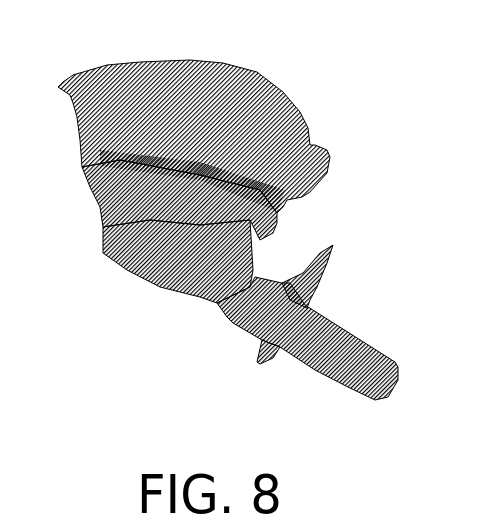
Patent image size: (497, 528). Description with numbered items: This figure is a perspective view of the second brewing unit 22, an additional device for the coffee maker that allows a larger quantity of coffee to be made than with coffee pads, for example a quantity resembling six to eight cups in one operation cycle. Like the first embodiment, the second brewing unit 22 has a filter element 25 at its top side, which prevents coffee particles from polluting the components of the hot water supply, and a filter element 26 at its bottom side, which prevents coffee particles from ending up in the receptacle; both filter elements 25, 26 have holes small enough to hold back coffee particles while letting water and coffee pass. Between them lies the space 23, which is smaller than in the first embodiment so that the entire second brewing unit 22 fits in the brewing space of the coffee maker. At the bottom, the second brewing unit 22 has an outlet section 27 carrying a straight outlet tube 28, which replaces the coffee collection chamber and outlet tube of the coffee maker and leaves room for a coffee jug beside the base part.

The second brewing unit 22 is at (88, 184).
The space 23 is at (197, 160).
The filter element 25 is at (114, 126).
The filter element 26 is at (100, 280).
The outlet section 27 is at (230, 343).
The outlet tube 28 is at (331, 364).